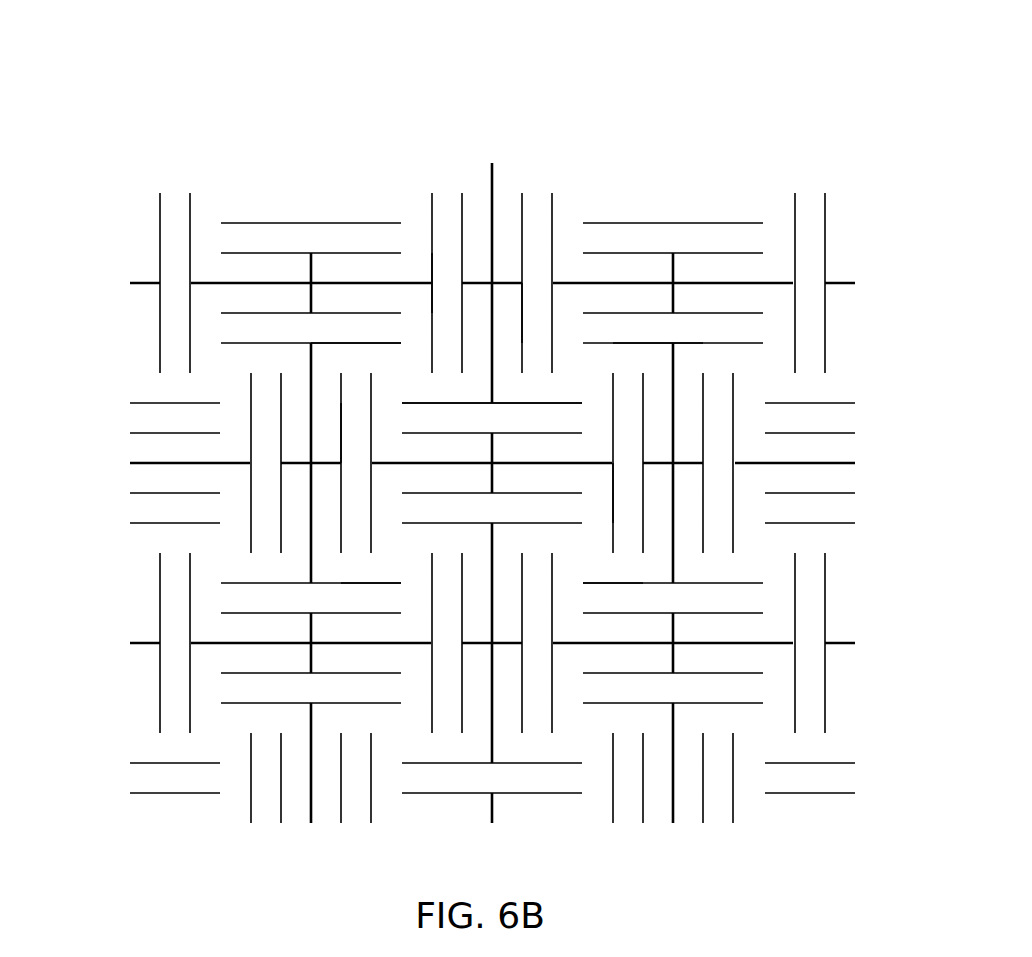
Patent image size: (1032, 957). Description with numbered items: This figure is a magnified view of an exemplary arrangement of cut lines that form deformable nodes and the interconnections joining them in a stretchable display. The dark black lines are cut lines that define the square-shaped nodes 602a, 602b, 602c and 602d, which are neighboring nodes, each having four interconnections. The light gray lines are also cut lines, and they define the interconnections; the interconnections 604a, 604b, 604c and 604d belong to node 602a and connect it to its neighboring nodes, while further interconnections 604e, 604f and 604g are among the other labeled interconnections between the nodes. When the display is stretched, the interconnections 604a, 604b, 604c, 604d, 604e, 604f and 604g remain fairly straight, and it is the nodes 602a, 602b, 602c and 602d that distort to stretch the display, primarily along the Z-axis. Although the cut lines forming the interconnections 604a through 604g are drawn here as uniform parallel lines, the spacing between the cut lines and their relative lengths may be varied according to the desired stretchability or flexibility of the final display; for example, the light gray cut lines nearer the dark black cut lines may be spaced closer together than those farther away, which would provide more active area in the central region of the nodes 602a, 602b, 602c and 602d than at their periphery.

The node 602a is at (412, 380).
The node 602b is at (572, 378).
The node 602c is at (585, 557).
The node 602d is at (398, 558).
The interconnection 604a is at (343, 322).
The interconnection 604b is at (443, 272).
The interconnection 604c is at (488, 420).
The interconnection 604d is at (352, 435).
The interconnection 604e is at (533, 305).
The interconnection 604f is at (652, 330).
The interconnection 604g is at (623, 490).